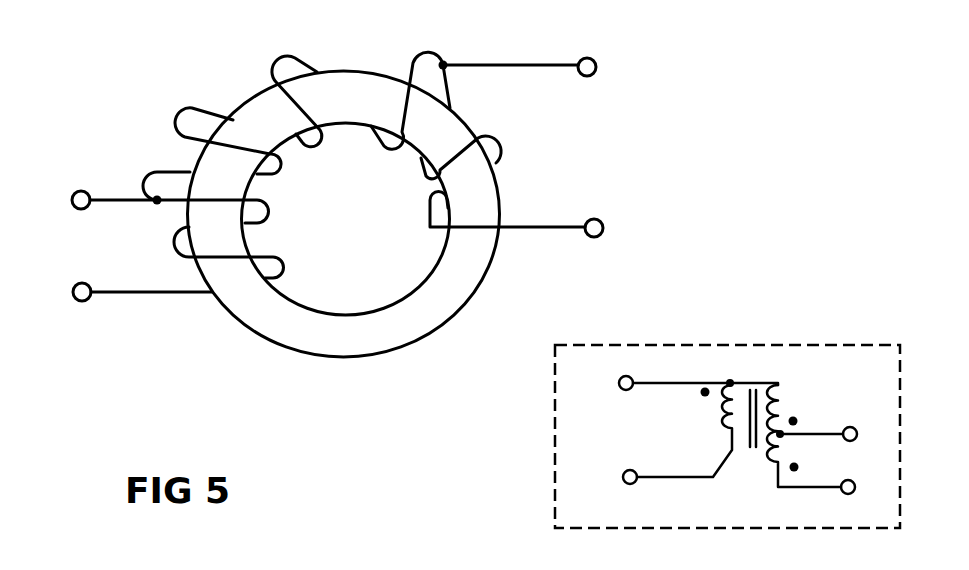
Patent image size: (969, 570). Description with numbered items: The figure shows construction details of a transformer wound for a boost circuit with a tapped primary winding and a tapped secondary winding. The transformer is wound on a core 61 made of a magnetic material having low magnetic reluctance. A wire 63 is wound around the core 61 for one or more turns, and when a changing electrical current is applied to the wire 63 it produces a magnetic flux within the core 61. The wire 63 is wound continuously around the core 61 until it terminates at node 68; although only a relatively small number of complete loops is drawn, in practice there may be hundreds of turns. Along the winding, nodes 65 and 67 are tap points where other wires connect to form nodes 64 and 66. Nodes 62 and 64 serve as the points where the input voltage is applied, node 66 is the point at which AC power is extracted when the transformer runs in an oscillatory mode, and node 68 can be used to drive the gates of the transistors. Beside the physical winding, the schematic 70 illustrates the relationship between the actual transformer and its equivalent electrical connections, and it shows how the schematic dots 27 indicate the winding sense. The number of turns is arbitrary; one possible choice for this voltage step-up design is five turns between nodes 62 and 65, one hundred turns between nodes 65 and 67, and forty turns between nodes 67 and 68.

The core 61 is at (292, 322).
The node 62 is at (67, 287).
The wire 63 is at (138, 293).
The node 64 is at (78, 188).
The node 65 is at (143, 195).
The node 66 is at (575, 75).
The node 67 is at (447, 60).
The node 68 is at (583, 238).
The schematic 70 is at (555, 412).
The schematic dots 27 is at (702, 395).